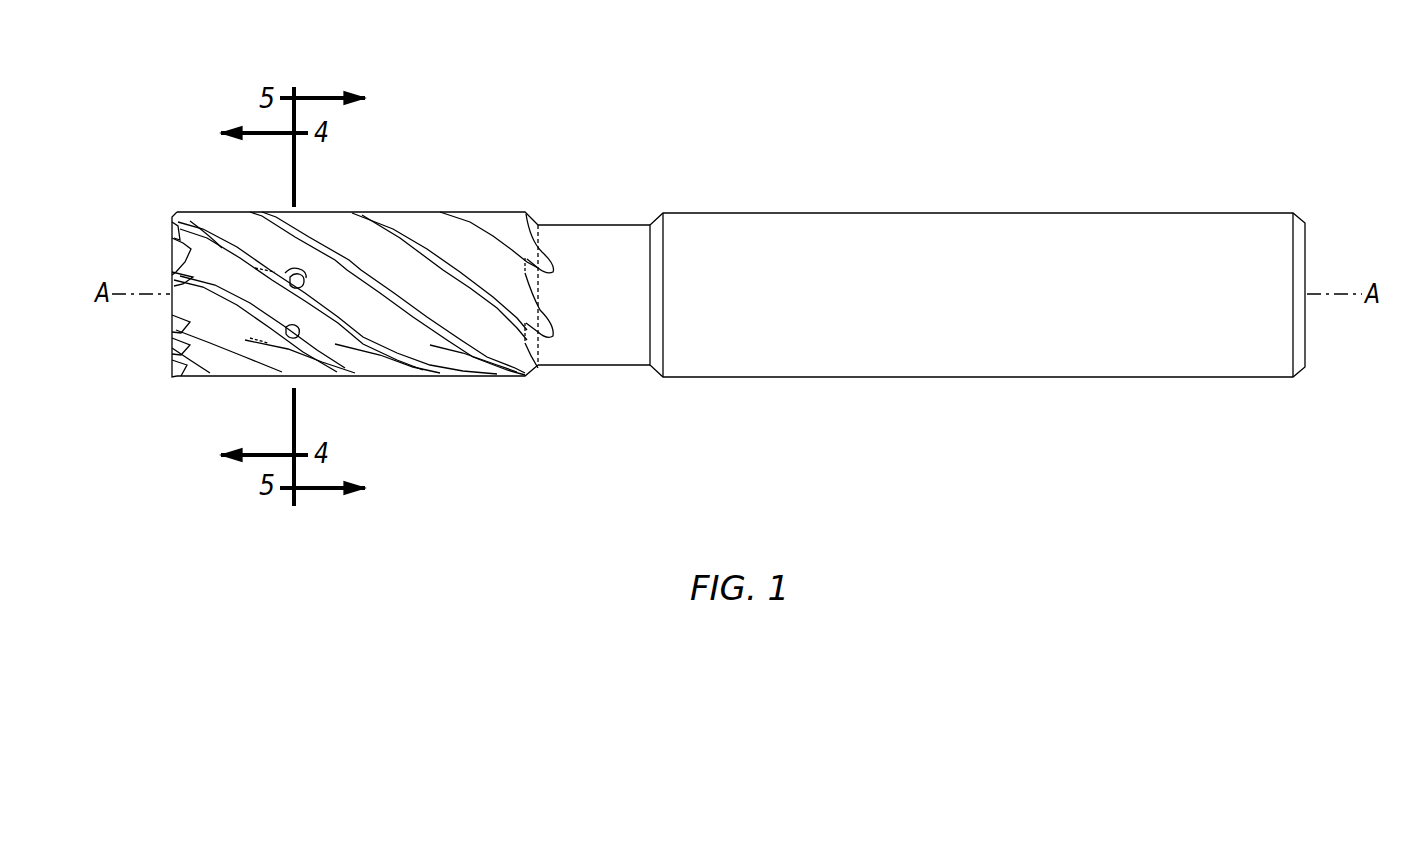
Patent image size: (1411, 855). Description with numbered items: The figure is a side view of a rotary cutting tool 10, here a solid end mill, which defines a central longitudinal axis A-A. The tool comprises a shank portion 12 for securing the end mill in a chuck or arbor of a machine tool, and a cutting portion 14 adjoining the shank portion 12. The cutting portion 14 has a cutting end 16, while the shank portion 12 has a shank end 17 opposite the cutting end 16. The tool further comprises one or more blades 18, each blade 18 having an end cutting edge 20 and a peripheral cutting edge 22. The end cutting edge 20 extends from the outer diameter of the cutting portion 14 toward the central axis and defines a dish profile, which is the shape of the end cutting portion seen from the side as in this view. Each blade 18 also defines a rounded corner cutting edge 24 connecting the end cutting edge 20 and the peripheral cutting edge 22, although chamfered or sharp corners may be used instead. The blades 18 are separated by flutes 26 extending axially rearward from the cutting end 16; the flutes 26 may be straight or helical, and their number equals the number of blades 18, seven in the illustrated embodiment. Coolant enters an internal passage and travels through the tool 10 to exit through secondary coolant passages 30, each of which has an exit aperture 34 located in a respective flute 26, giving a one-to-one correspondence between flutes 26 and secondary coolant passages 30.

The rotary cutting tool 10 is at (931, 75).
The shank portion 12 is at (1023, 199).
The cutting portion 14 is at (389, 199).
The cutting end 16 is at (149, 252).
The shank end 17 is at (1319, 252).
The blade 18 is at (229, 237).
The end cutting edge 20 is at (172, 340).
The peripheral cutting edge 22 is at (208, 370).
The rounded corner cutting edge 24 is at (180, 374).
The flute 26 is at (215, 267).
The secondary coolant passage 30 is at (297, 271).
The exit aperture 34 is at (307, 284).